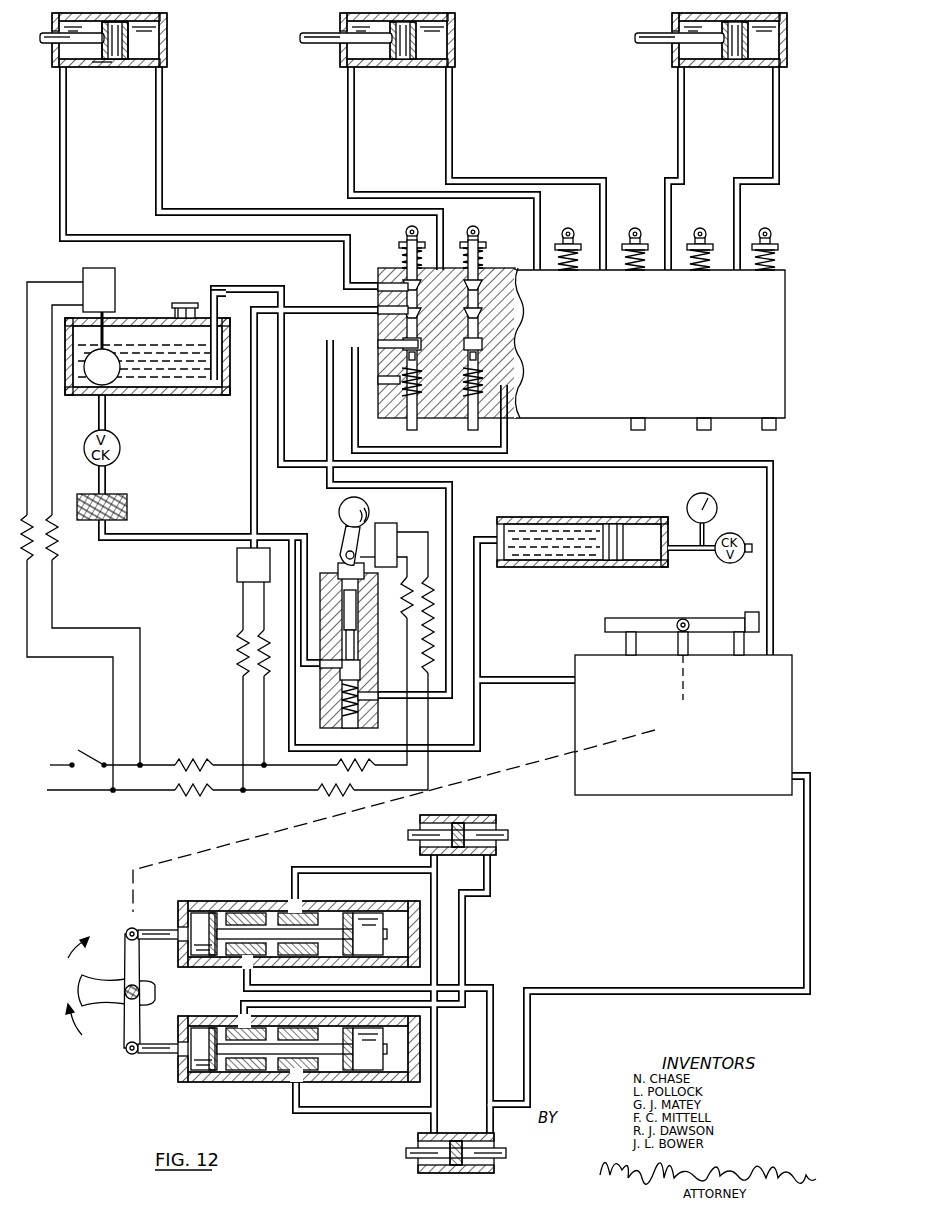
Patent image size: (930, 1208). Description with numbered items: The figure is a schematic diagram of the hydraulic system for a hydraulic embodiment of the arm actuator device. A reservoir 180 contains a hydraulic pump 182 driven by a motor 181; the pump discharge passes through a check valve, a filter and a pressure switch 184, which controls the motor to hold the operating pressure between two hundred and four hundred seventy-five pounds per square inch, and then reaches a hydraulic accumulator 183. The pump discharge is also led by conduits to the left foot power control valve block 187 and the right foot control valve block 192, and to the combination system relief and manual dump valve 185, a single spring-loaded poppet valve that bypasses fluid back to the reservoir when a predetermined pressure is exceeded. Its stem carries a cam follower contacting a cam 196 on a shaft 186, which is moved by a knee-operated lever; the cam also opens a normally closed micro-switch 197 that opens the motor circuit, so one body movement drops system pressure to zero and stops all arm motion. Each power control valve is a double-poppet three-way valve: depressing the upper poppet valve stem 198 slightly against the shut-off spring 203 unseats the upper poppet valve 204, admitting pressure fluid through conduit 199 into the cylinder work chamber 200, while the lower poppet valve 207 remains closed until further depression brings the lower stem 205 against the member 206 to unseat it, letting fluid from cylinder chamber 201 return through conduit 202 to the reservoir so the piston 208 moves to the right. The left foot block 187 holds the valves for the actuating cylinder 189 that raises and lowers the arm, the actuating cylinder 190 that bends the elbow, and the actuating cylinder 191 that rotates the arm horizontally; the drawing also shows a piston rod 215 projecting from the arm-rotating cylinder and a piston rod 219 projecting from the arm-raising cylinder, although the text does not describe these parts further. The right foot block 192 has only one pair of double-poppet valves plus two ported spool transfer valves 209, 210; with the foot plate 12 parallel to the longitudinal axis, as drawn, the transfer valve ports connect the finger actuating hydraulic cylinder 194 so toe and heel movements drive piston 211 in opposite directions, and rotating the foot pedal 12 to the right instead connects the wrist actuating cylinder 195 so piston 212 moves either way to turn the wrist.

The foot plate 12 is at (645, 627).
The reservoir 180 is at (142, 314).
The motor 181 is at (108, 276).
The hydraulic pump 182 is at (118, 364).
The hydraulic accumulator 183 is at (551, 520).
The pressure switch 184 is at (237, 569).
The combination system relief and manual dump valve 185 is at (322, 575).
The shaft 186 is at (337, 506).
The left foot power control valve block 187 is at (581, 329).
The actuating cylinder 189 is at (708, 63).
The actuating cylinder 190 is at (92, 63).
The actuating cylinder 191 is at (380, 63).
The right foot control valve block 192 is at (568, 716).
The finger actuating hydraulic cylinder 194 is at (447, 815).
The wrist actuating cylinder 195 is at (440, 1140).
The cam 196 is at (358, 560).
The micro-switch 197 is at (384, 531).
The upper poppet valve stem 198 is at (406, 236).
The conduit 199 is at (262, 248).
The cylinder work chamber 200 is at (60, 52).
The cylinder chamber 201 is at (165, 36).
The conduit 202 is at (222, 214).
The shut-off spring 203 is at (403, 262).
The upper poppet valve 204 is at (380, 290).
The lower stem 205 is at (405, 318).
The member 206 is at (408, 355).
The lower poppet valve 207 is at (408, 376).
The piston 208 is at (126, 62).
The transfer valve 209 is at (206, 1088).
The transfer valve 210 is at (206, 902).
The piston 211 is at (470, 818).
The piston 212 is at (448, 1166).
The piston rod 215 is at (313, 45).
The piston rod 219 is at (648, 46).